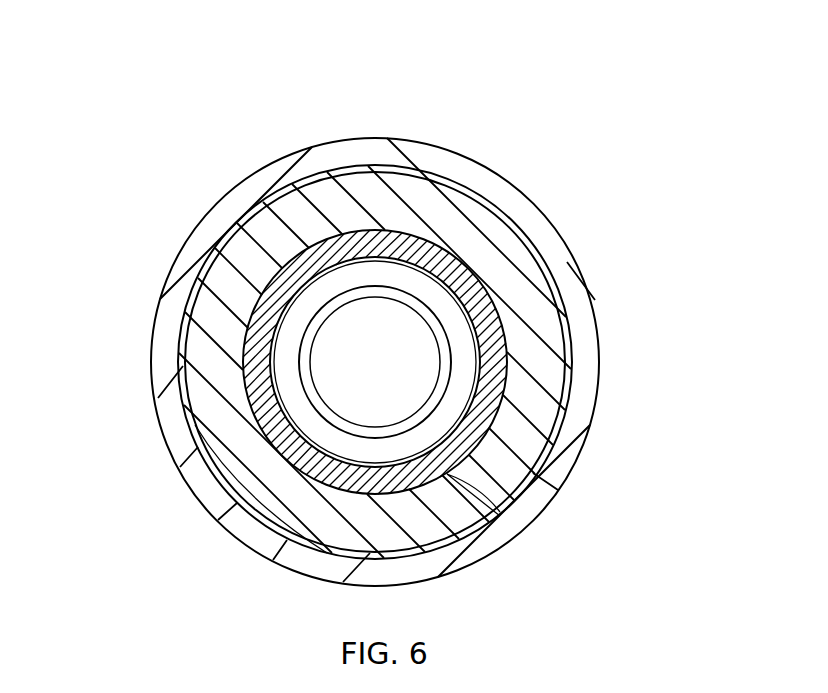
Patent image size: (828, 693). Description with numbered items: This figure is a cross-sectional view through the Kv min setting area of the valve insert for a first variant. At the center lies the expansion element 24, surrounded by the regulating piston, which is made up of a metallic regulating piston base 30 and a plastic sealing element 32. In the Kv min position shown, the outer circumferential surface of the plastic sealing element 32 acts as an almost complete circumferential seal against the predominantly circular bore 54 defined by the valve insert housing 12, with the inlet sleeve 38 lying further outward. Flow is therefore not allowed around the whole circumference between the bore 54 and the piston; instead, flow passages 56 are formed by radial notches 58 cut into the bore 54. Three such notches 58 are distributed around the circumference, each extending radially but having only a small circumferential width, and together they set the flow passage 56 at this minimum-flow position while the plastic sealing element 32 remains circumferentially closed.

The valve insert housing 12 is at (547, 340).
The expansion element 24 is at (362, 374).
The regulating piston base 30 is at (400, 265).
The plastic sealing element 32 is at (516, 234).
The inlet sleeve 38 is at (588, 384).
The bore 54 is at (507, 323).
The flow passage 56 is at (240, 374).
The radial notch 58 is at (442, 240).